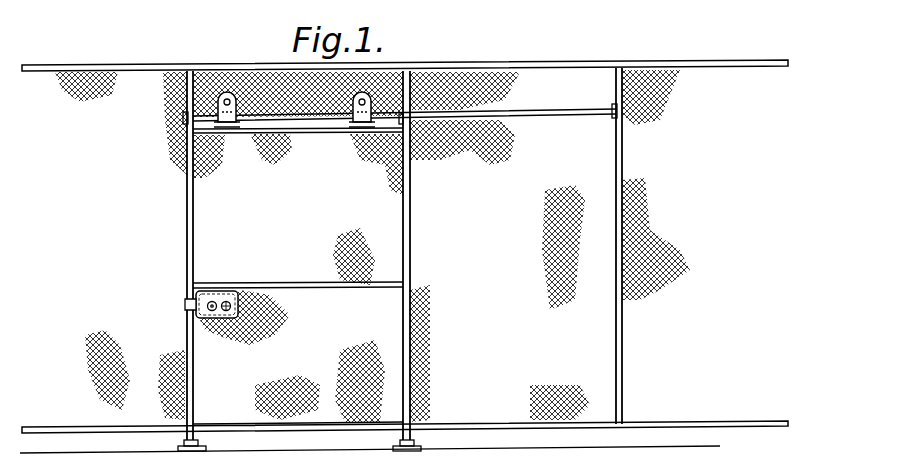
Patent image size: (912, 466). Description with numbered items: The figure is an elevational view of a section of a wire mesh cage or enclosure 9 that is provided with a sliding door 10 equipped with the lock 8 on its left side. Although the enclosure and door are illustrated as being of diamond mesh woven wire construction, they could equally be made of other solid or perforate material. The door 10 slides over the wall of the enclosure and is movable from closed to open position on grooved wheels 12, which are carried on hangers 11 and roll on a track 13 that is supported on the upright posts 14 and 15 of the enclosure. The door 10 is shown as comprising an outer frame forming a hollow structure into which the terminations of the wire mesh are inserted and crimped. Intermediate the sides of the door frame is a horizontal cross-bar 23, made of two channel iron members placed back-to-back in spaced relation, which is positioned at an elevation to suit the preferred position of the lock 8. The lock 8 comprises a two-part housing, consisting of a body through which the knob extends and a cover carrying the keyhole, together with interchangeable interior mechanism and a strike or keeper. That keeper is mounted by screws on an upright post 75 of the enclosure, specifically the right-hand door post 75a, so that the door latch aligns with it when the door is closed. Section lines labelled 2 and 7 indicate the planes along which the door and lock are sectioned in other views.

The section line 2- 2 is at (465, 252).
The section line 7- 7 is at (157, 276).
The lock 8 is at (197, 311).
The enclosure 9 is at (609, 56).
The door 10 is at (413, 180).
The hangers 11 is at (418, 70).
The grooved wheels 12 is at (368, 108).
The track 13 is at (553, 110).
The upright post 14 is at (185, 86).
The upright post 15 is at (625, 92).
The horizontal cross-bar 23 is at (298, 284).
The upright post 75 is at (186, 193).
The right-hand door post 75a is at (412, 100).